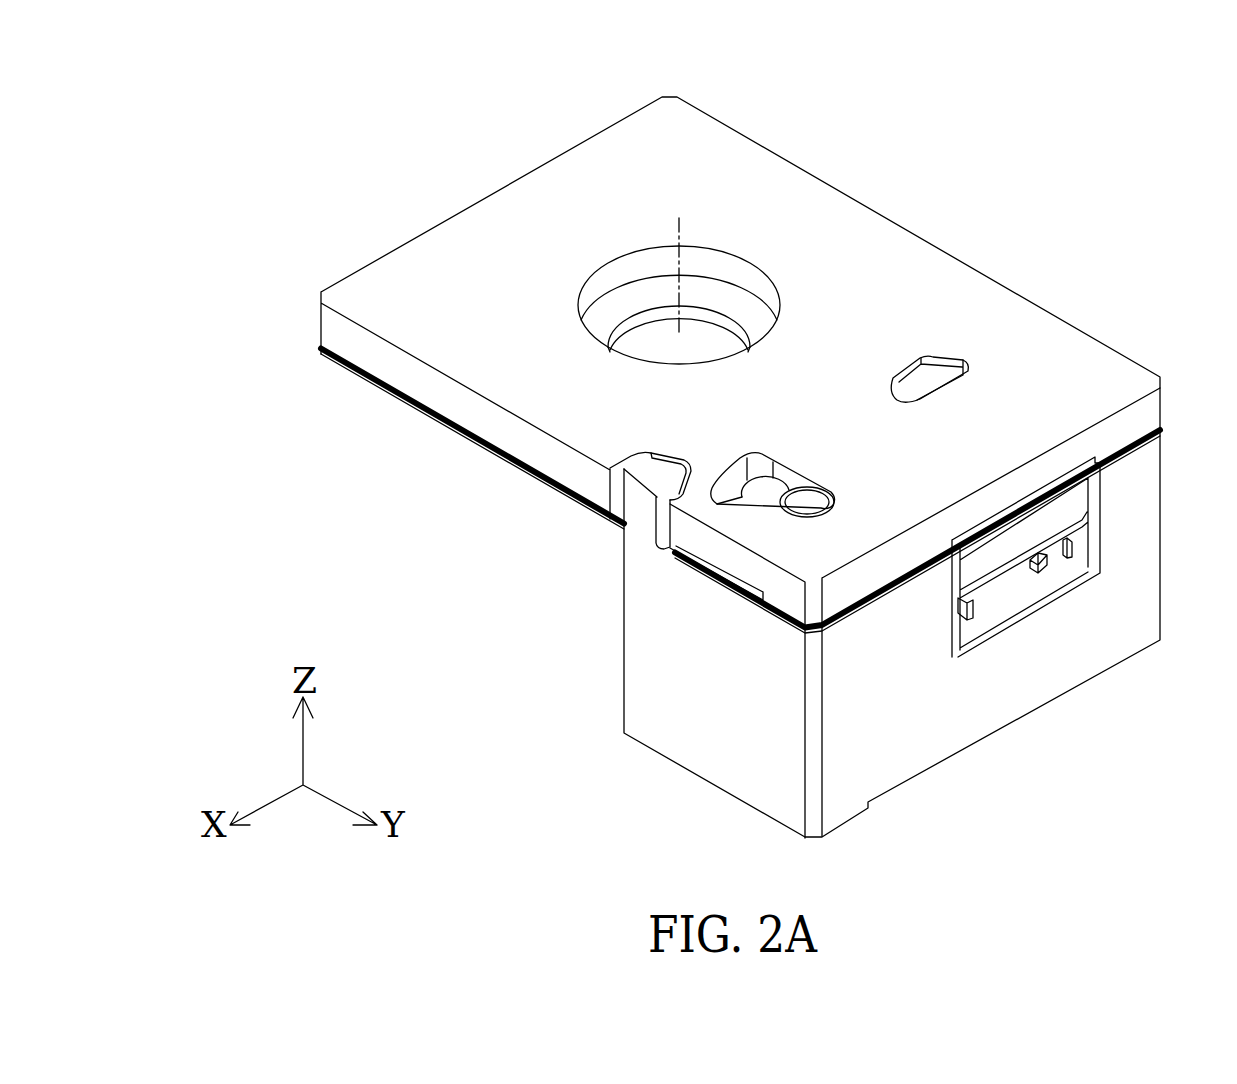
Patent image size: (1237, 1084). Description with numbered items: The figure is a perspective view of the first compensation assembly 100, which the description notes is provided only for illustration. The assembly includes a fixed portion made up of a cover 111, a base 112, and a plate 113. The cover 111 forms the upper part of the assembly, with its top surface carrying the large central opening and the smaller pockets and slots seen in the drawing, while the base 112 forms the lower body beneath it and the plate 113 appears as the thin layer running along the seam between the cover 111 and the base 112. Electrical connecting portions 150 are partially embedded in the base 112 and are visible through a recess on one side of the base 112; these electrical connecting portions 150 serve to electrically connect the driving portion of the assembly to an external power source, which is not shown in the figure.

The first compensation assembly 100 is at (327, 79).
The cover 111 is at (898, 243).
The base 112 is at (714, 768).
The plate 113 is at (457, 428).
The electrical connecting portion 150 is at (960, 603).